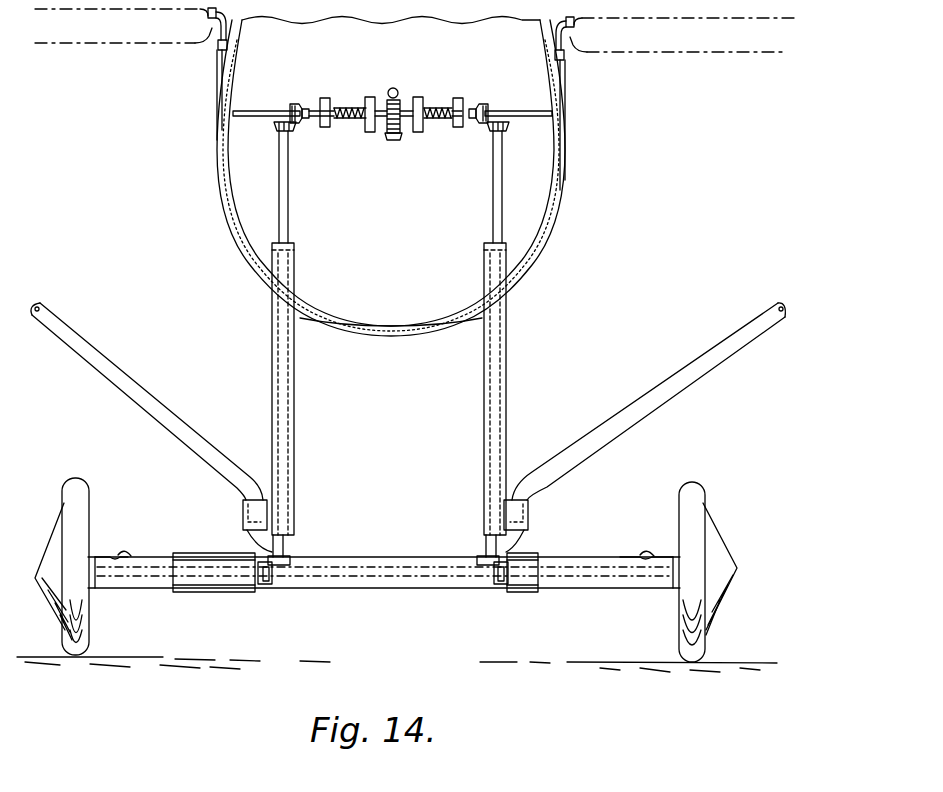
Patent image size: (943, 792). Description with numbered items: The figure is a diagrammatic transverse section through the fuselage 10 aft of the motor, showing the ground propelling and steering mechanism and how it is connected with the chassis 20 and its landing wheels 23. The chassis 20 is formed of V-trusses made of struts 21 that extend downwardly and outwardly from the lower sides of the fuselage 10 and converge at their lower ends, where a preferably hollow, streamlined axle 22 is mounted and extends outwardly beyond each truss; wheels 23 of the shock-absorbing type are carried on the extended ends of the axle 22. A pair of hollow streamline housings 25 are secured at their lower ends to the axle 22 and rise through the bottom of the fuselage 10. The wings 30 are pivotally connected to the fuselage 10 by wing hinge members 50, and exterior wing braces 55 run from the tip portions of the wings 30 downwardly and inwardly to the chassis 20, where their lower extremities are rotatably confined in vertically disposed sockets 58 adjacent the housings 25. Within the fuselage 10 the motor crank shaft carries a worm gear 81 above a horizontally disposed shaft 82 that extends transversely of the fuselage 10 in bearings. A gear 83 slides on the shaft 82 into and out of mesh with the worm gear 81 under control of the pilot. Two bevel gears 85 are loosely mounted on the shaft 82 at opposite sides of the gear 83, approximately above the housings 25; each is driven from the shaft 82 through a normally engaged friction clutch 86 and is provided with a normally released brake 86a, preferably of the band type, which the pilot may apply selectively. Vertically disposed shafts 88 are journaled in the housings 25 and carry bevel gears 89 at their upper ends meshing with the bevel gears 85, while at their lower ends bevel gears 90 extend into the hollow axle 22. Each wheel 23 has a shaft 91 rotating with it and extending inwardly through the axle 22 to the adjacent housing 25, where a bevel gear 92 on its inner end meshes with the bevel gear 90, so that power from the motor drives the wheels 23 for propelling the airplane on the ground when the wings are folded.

The fuselage 10 is at (563, 181).
The undercarriage or chassis 20 is at (395, 504).
The struts 21 is at (132, 558).
The axle 22 is at (384, 588).
The wheels 23 is at (63, 504).
The stream line housings 25 is at (294, 405).
The wings 30 is at (138, 36).
The wing hinge members 50 is at (240, 36).
The wing braces 55 is at (153, 397).
The sockets 58 is at (247, 531).
The worm gear 81 is at (397, 91).
The shaft 82 is at (250, 112).
The gear 83 is at (392, 140).
The bevel gears 85 is at (298, 122).
The friction clutch 86 is at (348, 110).
The brake 86a is at (325, 98).
The vertically disposed shafts 88 is at (289, 218).
The bevel gears 89 is at (275, 127).
The bevel gears 90 is at (290, 561).
The shaft 91 is at (213, 582).
The bevel gears 92 is at (268, 584).